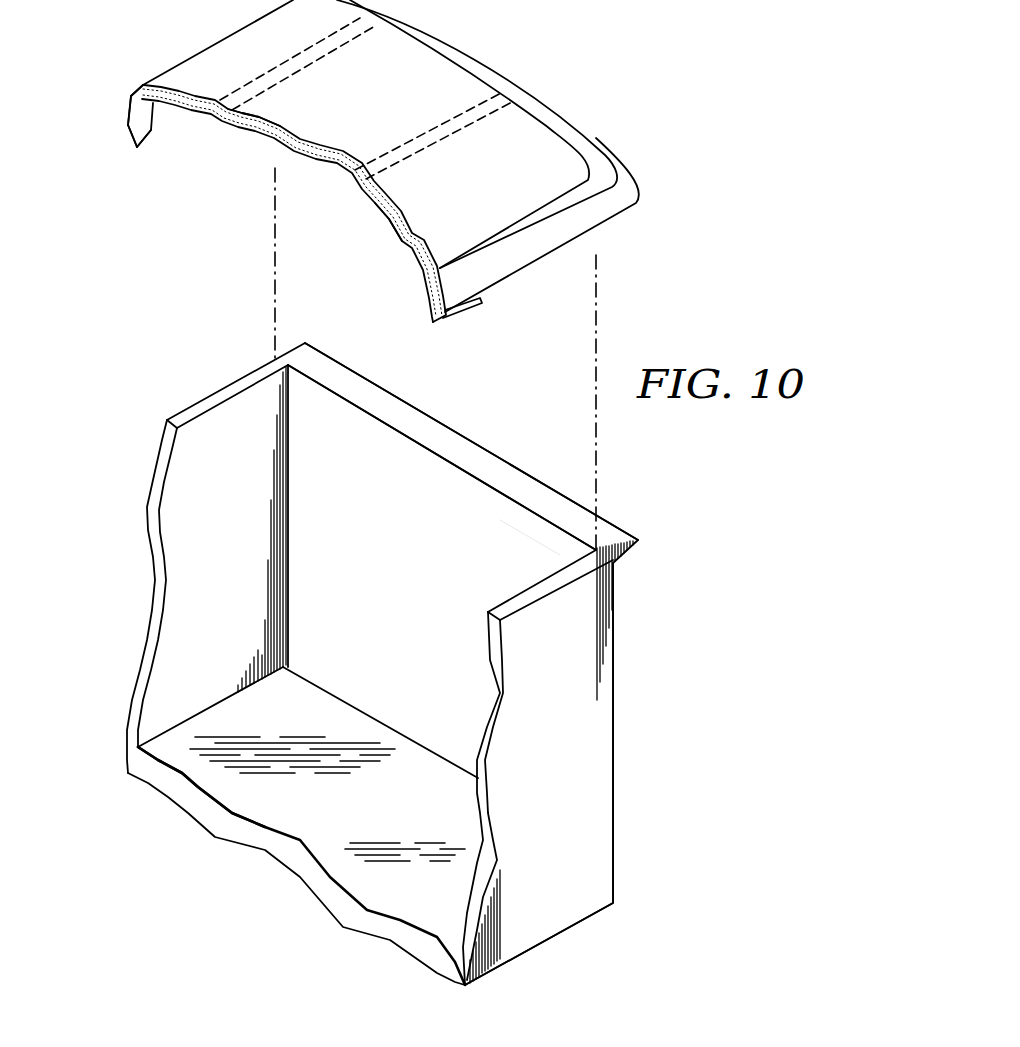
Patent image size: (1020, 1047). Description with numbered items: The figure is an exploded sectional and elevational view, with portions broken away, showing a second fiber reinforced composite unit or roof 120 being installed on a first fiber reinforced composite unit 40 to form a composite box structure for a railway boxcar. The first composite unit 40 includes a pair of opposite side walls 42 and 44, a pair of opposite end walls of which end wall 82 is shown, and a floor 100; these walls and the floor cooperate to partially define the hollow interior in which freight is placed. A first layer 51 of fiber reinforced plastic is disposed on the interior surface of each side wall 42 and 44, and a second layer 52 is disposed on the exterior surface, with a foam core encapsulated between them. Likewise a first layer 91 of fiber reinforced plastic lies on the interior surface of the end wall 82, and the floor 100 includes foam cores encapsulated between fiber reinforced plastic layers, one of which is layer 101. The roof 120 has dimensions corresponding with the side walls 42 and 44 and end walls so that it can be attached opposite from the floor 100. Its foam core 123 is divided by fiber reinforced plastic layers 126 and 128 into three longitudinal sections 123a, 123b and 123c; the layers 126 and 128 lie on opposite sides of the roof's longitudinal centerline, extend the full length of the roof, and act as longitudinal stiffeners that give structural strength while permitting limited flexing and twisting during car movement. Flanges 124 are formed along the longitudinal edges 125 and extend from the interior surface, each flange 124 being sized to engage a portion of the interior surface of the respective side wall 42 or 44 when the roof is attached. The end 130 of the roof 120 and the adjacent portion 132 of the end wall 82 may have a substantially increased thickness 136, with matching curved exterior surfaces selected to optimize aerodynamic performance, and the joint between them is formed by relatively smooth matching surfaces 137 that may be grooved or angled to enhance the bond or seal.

The second fiber reinforced composite unit or roof 120 is at (419, 74).
The foam core 123 is at (316, 150).
The longitudinal section 123a is at (137, 97).
The longitudinal section 123b is at (262, 120).
The longitudinal section 123c is at (389, 228).
The flange 124 is at (150, 132).
The longitudinal edge 125 is at (128, 124).
The fiber reinforced plastic layer 126 is at (320, 50).
The fiber reinforced plastic layer 128 is at (460, 117).
The end of roof 130 is at (628, 185).
The adjacent portion of end wall 132 is at (616, 530).
The increased thickness 136 is at (386, 424).
The matching surfaces 137 is at (442, 392).
The end wall 82 is at (505, 482).
The first layer of fiber reinforced plastic 91 is at (533, 530).
The first fiber reinforced composite unit 40 is at (670, 743).
The side wall 42 is at (565, 688).
The side wall 44 is at (186, 507).
The first layer of fiber reinforced plastic 51 is at (190, 586).
The second layer of fiber reinforced plastic 52 is at (597, 798).
The floor 100 is at (325, 875).
The layer of fiber reinforced plastic 101 is at (225, 787).